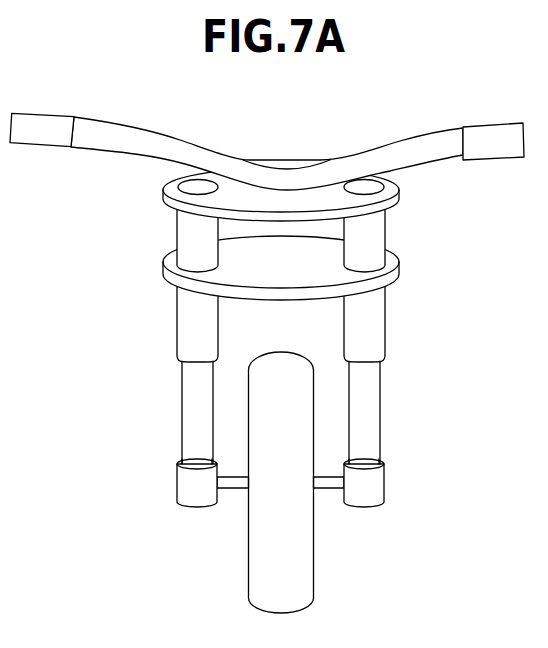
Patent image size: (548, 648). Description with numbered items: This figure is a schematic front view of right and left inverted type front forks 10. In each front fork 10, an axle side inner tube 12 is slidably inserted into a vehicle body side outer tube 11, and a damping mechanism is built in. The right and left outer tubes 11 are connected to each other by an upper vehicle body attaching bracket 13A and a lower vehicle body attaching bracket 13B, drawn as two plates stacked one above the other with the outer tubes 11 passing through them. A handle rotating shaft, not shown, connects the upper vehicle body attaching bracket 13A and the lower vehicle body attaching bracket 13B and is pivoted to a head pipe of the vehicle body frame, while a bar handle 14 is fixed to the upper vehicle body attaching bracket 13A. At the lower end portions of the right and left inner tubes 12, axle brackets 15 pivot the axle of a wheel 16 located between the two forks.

The inverted type front fork 10 is at (125, 265).
The vehicle body side outer tube 11 is at (187, 227).
The axle side inner tube 12 is at (188, 410).
The upper vehicle body attaching bracket 13A is at (394, 180).
The lower vehicle body attaching bracket 13B is at (398, 262).
The bar handle 14 is at (108, 123).
The axle bracket 15 is at (181, 483).
The wheel 16 is at (256, 561).